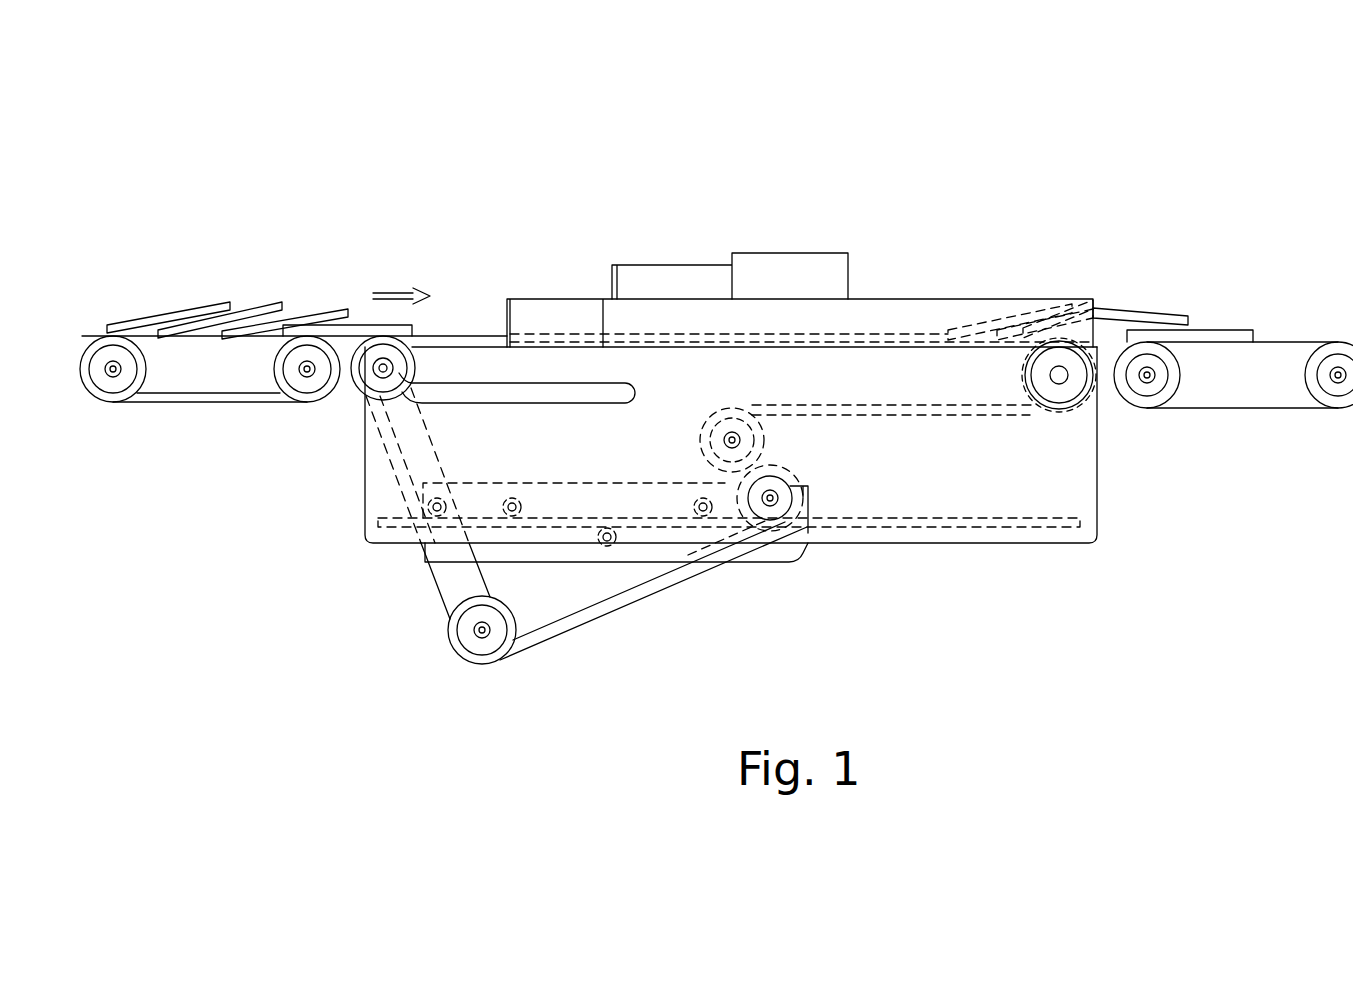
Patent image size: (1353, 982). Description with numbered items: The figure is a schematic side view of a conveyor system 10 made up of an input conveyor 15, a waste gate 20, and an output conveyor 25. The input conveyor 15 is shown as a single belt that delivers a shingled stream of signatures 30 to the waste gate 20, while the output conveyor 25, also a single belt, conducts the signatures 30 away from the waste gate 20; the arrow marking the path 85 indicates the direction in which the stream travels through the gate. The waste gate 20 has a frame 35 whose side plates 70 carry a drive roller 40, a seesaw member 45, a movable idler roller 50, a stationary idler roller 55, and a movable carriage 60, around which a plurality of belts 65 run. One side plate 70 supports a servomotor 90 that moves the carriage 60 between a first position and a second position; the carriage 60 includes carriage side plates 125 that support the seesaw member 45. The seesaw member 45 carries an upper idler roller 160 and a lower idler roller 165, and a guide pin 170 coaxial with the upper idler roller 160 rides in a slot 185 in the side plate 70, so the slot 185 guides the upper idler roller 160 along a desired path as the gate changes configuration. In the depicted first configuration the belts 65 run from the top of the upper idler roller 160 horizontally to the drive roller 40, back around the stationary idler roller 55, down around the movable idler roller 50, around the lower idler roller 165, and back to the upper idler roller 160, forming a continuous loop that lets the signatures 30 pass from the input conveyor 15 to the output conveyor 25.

The conveyor system 10 is at (905, 162).
The input conveyor 15 is at (170, 400).
The waste gate 20 is at (477, 262).
The output conveyor 25 is at (1268, 343).
The signatures 30 is at (310, 310).
The frame 35 is at (1087, 497).
The drive roller 40 is at (1075, 413).
The seesaw member 45 is at (458, 580).
The movable idler roller 50 is at (812, 543).
The stationary idler roller 55 is at (765, 438).
The movable carriage 60 is at (543, 498).
The belts 65 is at (655, 583).
The side plates 70 is at (988, 483).
The path 85 is at (392, 293).
The servomotor 90 is at (660, 275).
The carriage side plates 125 is at (762, 552).
The upper idler roller 160 is at (355, 389).
The lower idler roller 165 is at (490, 652).
The guide pin 170 is at (398, 368).
The slot 185 is at (617, 383).